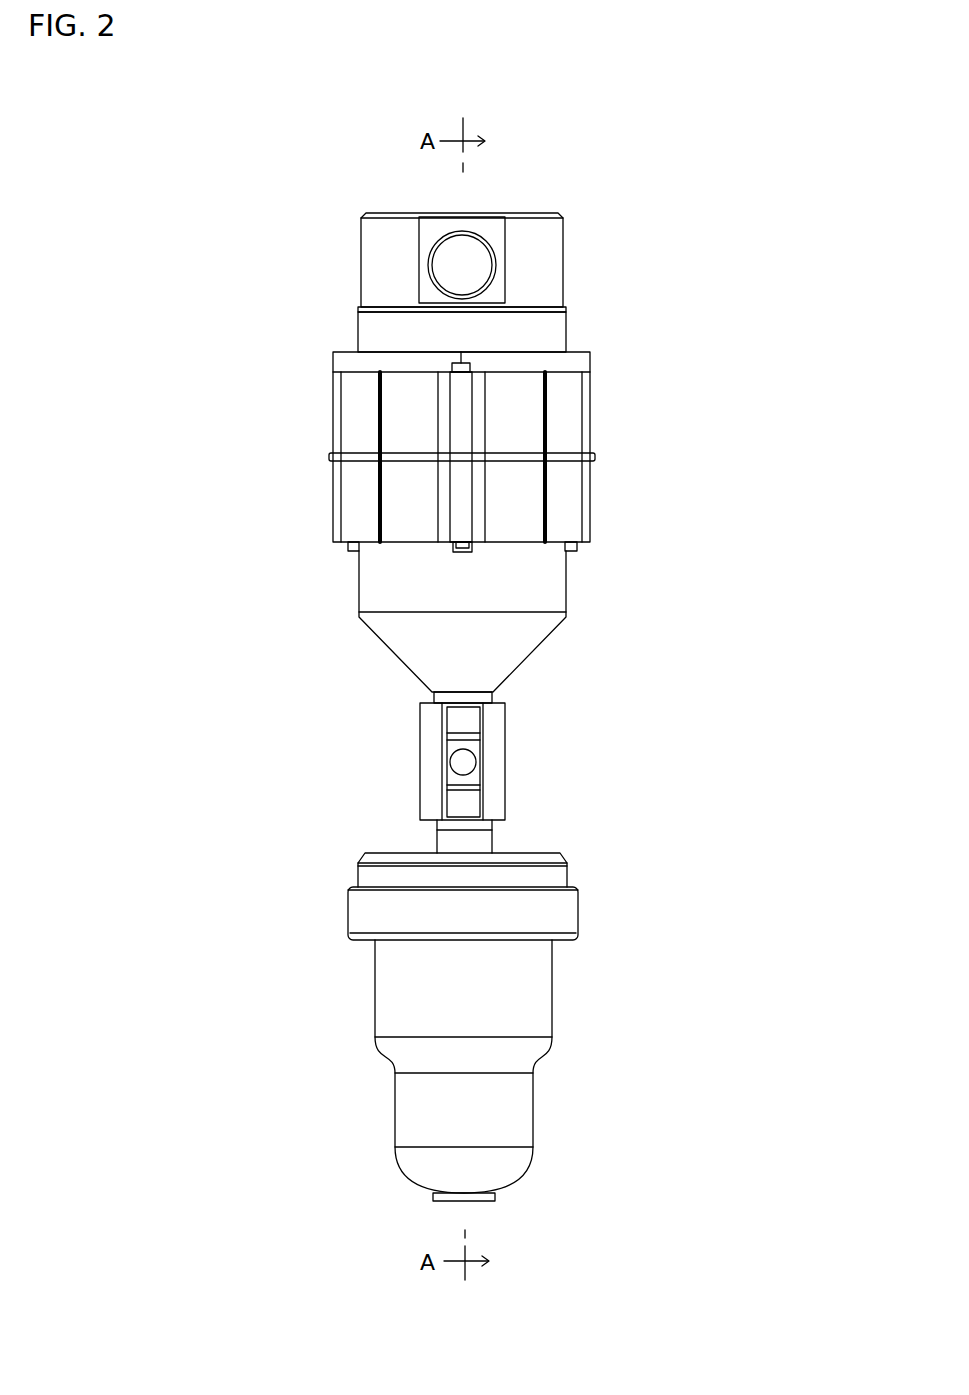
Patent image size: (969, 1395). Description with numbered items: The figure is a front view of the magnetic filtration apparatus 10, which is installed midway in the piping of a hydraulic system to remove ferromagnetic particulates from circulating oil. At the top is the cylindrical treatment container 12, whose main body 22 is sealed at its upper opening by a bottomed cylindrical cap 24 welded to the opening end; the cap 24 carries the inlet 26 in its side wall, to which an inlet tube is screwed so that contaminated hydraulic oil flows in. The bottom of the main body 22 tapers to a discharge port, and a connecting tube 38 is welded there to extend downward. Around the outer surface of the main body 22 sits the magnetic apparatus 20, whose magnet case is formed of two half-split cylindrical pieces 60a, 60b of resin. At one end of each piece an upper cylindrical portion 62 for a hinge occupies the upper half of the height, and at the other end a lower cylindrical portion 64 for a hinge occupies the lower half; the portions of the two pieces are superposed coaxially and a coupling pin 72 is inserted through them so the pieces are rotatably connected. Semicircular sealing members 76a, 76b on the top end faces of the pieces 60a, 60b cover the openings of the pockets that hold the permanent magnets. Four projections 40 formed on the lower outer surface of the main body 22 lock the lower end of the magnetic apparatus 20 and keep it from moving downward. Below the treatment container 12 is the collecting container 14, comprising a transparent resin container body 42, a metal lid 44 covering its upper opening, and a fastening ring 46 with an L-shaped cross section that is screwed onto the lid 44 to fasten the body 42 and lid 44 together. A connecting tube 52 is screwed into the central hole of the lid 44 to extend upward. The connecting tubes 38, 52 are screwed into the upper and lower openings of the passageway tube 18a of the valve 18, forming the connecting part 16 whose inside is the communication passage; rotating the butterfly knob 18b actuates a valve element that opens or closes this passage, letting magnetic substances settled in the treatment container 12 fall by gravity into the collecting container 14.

The magnetic filtration apparatus 10 is at (650, 200).
The treatment container 12 is at (592, 586).
The collecting container 14 is at (581, 1018).
The connecting part 16 is at (419, 834).
The valve 18 is at (528, 755).
The passageway tube 18a is at (497, 725).
The butterfly knob 18b is at (466, 806).
The magnetic apparatus 20 is at (632, 433).
The main body 22 is at (400, 589).
The cap 24 is at (377, 262).
The inlet 26 is at (468, 247).
The connecting tube 38 is at (436, 694).
The projections 40 is at (348, 548).
The container body 42 is at (388, 998).
The lid 44 is at (368, 877).
The fastening ring 46 is at (540, 912).
The connecting tube 52 is at (484, 830).
The half-split cylindrical piece 60a is at (360, 430).
The half-split cylindrical piece 60b is at (566, 402).
The upper cylindrical portion for a hinge 62 is at (460, 417).
The lower cylindrical portion for a hinge 64 is at (463, 494).
The coupling pin 72 is at (465, 362).
The sealing member 76a is at (345, 360).
The sealing member 76b is at (573, 360).